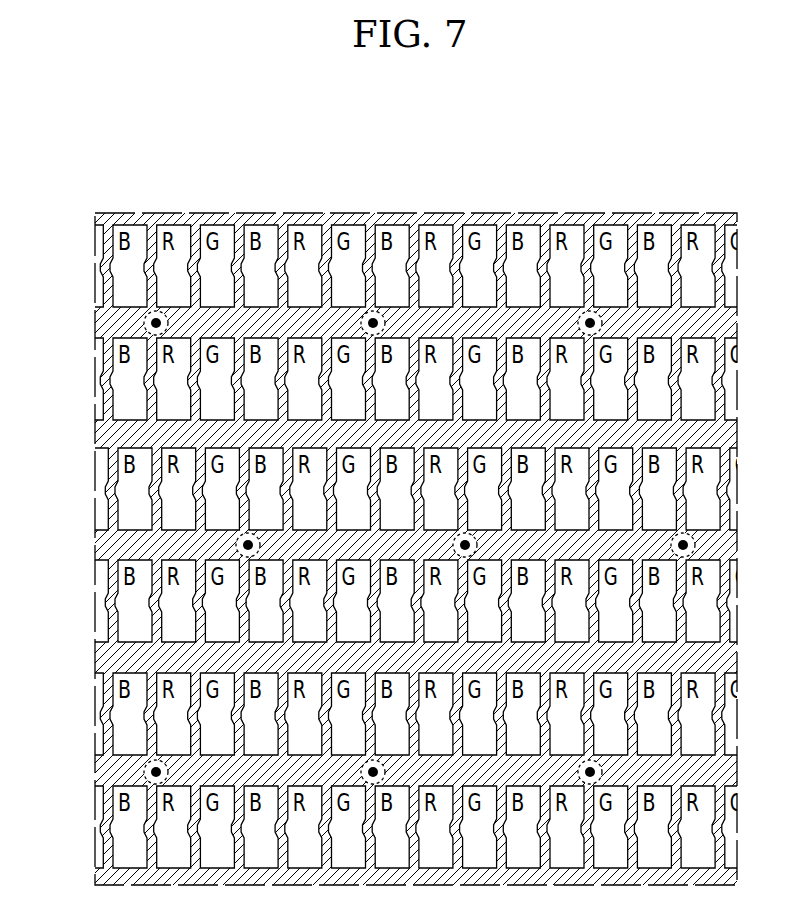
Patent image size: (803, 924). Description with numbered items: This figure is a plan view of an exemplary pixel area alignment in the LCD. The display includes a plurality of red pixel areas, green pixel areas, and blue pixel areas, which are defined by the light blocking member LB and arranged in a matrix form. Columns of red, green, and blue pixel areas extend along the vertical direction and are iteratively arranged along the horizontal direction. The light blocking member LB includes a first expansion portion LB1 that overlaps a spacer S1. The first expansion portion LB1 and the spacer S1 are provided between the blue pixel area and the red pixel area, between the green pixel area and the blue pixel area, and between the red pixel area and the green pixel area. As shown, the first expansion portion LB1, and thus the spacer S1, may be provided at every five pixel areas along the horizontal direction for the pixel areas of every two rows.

The spacer S1 is at (154, 318).
The first expansion portion LB1 is at (166, 314).
The light blocking member LB is at (98, 433).